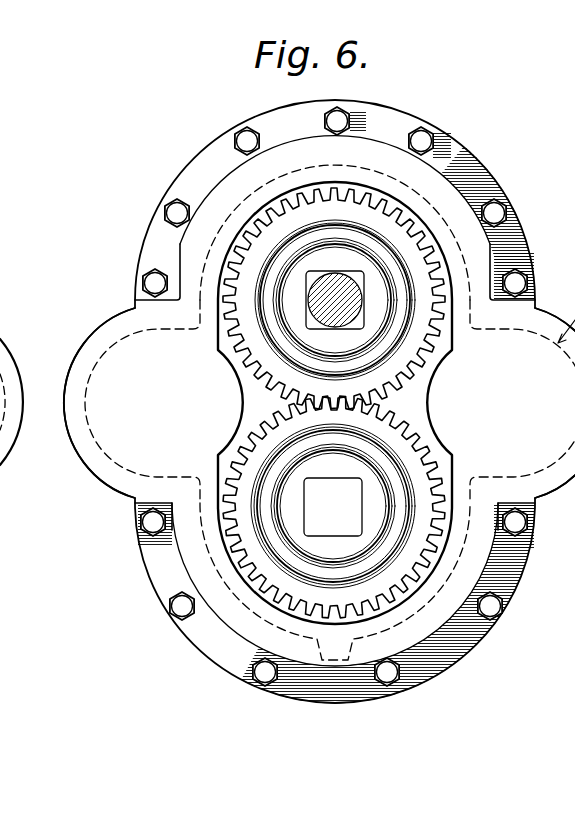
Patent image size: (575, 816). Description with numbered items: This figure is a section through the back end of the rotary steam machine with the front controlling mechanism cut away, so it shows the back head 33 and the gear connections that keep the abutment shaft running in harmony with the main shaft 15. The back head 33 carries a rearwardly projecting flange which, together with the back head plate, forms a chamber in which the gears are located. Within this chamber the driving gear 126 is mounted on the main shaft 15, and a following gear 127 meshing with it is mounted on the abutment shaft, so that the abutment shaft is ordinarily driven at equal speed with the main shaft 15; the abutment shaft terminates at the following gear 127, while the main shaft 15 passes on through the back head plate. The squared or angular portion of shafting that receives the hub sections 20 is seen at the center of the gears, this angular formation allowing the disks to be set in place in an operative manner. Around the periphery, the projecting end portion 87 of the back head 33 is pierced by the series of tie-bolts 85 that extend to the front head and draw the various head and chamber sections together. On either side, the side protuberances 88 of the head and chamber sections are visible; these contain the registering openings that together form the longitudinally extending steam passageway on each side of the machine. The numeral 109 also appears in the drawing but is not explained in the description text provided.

The back head 33 is at (380, 133).
The tie-bolts 85 is at (237, 141).
The projecting end portion of the back head 87 is at (462, 155).
The driving gear 126 is at (386, 281).
The following gear 127 is at (364, 507).
The main shaft 15 is at (336, 298).
The hub sections 20 is at (333, 507).
The side protuberances 88 is at (2, 372).
The adjacent figure port 109 is at (0, 487).